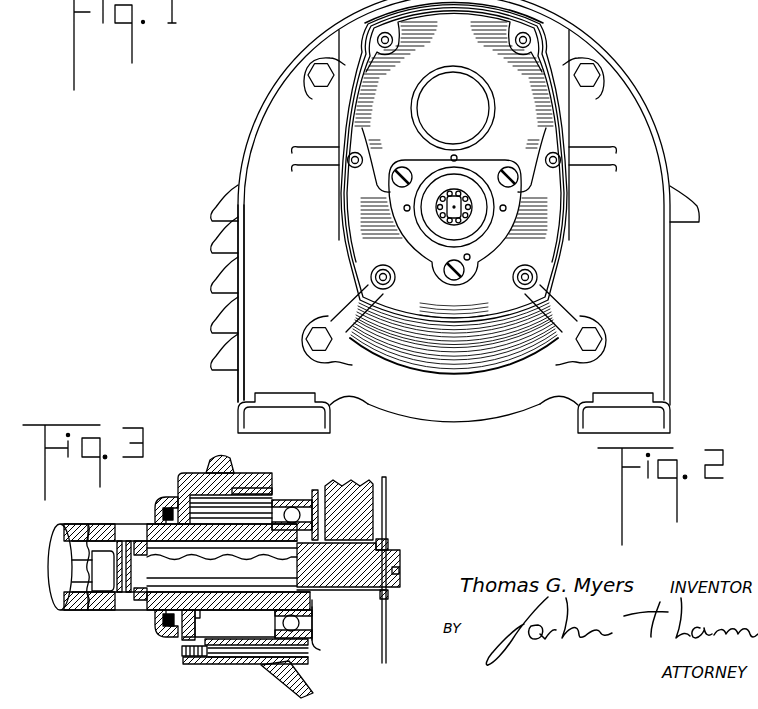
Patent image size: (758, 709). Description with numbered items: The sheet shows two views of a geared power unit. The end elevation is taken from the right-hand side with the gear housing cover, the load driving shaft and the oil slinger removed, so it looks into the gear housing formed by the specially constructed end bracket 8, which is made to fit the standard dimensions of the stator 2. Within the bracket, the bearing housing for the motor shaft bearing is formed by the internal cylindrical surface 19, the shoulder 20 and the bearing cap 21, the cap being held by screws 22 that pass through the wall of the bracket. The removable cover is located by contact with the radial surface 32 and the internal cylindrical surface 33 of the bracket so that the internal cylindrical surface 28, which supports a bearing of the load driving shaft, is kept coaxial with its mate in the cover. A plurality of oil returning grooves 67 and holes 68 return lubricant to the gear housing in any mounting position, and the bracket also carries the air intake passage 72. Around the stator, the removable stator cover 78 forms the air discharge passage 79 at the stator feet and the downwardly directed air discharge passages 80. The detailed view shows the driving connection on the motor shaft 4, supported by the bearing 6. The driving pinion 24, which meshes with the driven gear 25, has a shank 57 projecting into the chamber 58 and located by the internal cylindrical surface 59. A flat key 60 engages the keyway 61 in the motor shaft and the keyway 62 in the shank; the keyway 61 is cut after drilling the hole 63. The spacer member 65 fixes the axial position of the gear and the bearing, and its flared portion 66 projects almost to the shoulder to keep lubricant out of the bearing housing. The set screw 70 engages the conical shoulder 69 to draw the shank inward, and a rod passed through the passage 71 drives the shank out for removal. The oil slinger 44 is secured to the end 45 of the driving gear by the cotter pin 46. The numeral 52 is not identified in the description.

In FIG. 2, the stator 2 is at (567, 416).
In FIG. 3, the motor shaft 4 is at (70, 523).
In FIG. 3, the bearing 6 is at (290, 634).
In FIG. 2, the end bracket 8 is at (553, 47).
In FIG. 3, the internal cylindrical surface 19 is at (215, 658).
In FIG. 3, the shoulder 20 is at (320, 644).
In FIG. 3, the bearing cap 21 is at (178, 642).
In FIG. 2, the screws 22 is at (446, 268).
In FIG. 3, the screws 22 is at (318, 660).
In FIG. 2, the driving pinion 24 is at (465, 192).
In FIG. 3, the driving pinion 24 is at (385, 598).
In FIG. 3, the driven gear 25 is at (374, 509).
In FIG. 2, the internal cylindrical surface 28 is at (494, 98).
In FIG. 2, the radial surface 32 is at (570, 190).
In FIG. 2, the internal cylindrical surface 33 is at (560, 92).
In FIG. 3, the oil slinger 44 is at (387, 490).
In FIG. 2, the end of the driving gear 45 is at (461, 209).
In FIG. 3, the end of the driving gear 45 is at (390, 548).
In FIG. 3, the cotter pin 46 is at (399, 571).
In FIG. 2, the bolt lug 52 is at (590, 326).
In FIG. 3, the shank 57 is at (144, 600).
In FIG. 3, the chamber 58 is at (101, 612).
In FIG. 3, the internal cylindrical surface 59 is at (258, 613).
In FIG. 3, the key 60 is at (183, 523).
In FIG. 3, the keyway 61 is at (127, 524).
In FIG. 3, the keyway 62 is at (142, 524).
In FIG. 3, the hole 63 is at (115, 524).
In FIG. 3, the spacer member 65 is at (318, 604).
In FIG. 2, the flared portion 66 is at (427, 222).
In FIG. 3, the flared portion 66 is at (318, 622).
In FIG. 3, the oil returning grooves 67 is at (273, 493).
In FIG. 2, the holes 68 is at (405, 209).
In FIG. 3, the holes 68 is at (316, 490).
In FIG. 3, the conical shoulder 69 is at (127, 594).
In FIG. 3, the set screw 70 is at (136, 598).
In FIG. 3, the passage 71 is at (96, 611).
In FIG. 2, the air intake passage 72 is at (428, 353).
In FIG. 2, the removable stator cover 78 is at (238, 378).
In FIG. 2, the air discharge passage 79 is at (240, 406).
In FIG. 2, the air discharge passages 80 is at (220, 257).